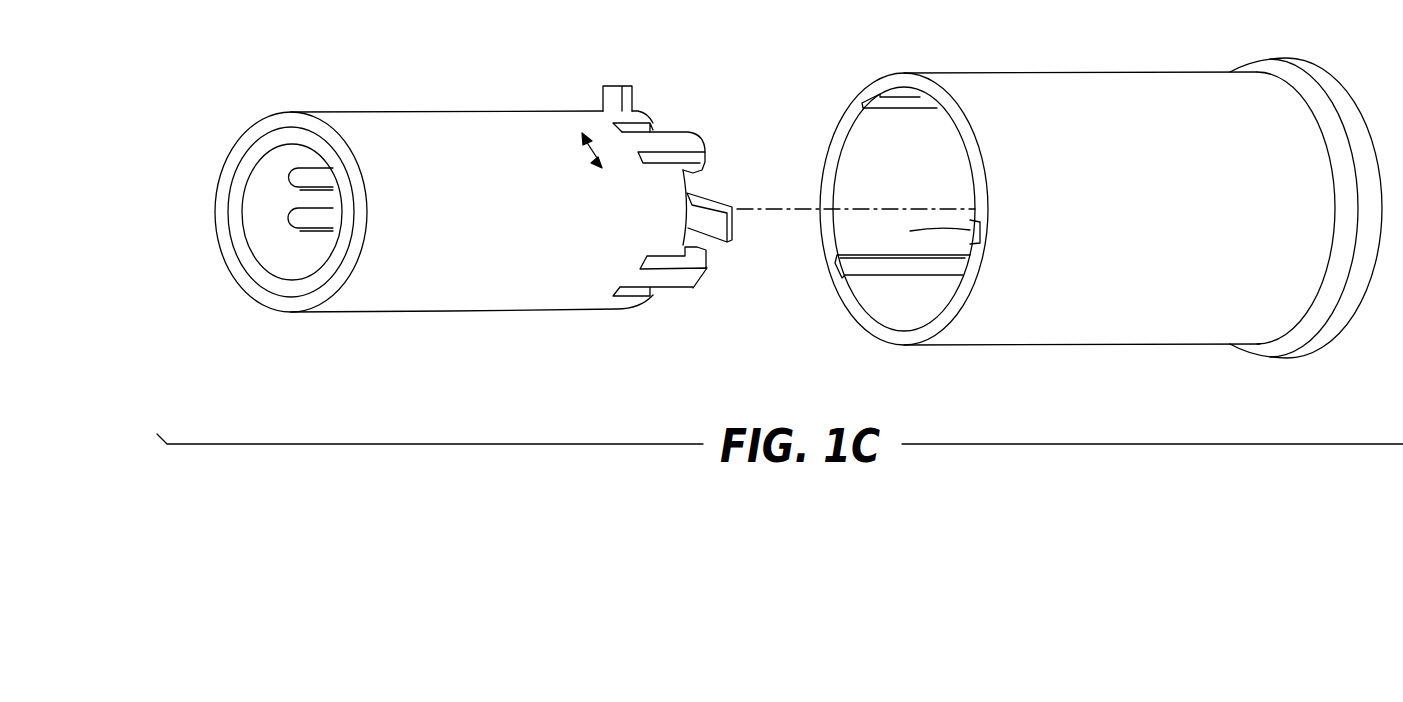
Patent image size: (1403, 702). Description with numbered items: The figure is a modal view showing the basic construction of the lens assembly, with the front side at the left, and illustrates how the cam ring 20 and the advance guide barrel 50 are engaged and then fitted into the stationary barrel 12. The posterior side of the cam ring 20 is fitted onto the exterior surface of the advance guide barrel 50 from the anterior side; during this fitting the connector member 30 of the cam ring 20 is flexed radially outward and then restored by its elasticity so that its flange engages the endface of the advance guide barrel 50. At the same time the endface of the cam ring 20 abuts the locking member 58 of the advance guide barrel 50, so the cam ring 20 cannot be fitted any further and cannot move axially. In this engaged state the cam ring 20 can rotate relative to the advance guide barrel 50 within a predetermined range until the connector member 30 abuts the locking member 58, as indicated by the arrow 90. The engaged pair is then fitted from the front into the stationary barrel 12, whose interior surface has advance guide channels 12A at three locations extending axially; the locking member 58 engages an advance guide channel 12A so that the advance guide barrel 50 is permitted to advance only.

The stationary barrel 12 is at (1067, 80).
The advance guide channel 12A is at (890, 112).
The cam ring 20 is at (273, 125).
The connector member 30 is at (687, 140).
The advance guide barrel 50 is at (243, 172).
The locking member 58 is at (717, 225).
The arrow 90 is at (580, 150).